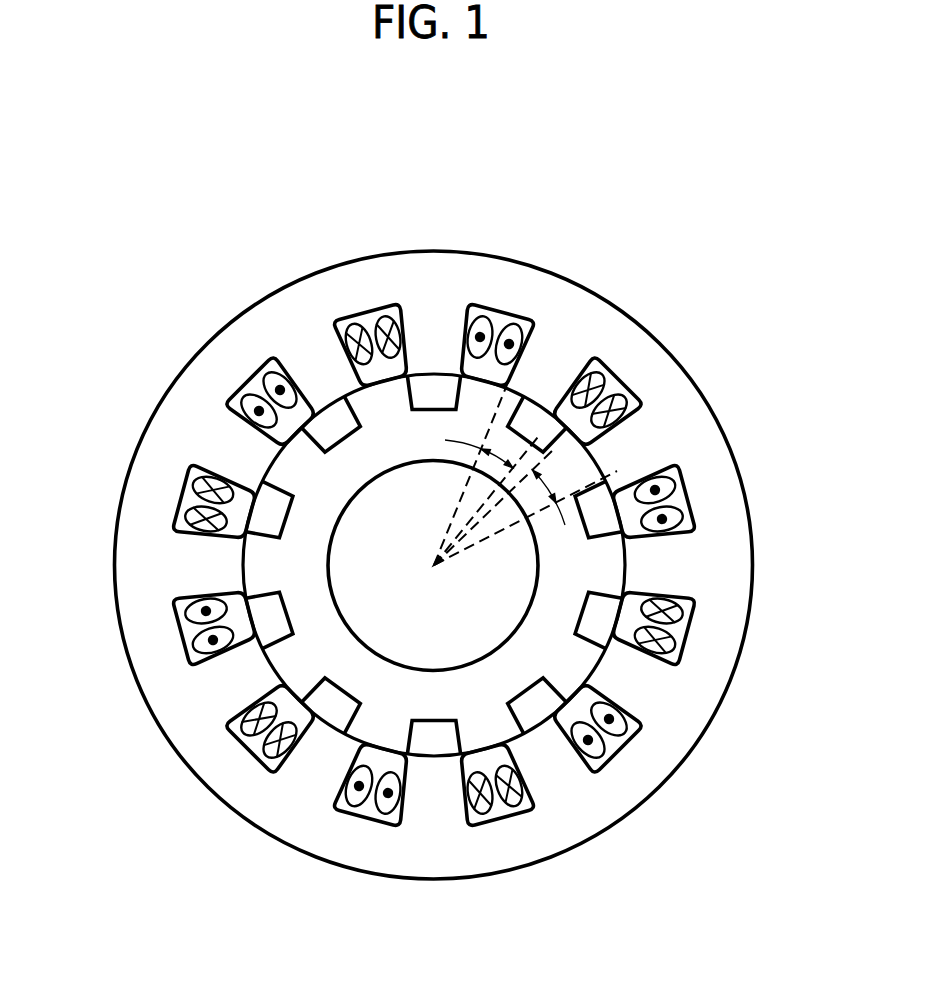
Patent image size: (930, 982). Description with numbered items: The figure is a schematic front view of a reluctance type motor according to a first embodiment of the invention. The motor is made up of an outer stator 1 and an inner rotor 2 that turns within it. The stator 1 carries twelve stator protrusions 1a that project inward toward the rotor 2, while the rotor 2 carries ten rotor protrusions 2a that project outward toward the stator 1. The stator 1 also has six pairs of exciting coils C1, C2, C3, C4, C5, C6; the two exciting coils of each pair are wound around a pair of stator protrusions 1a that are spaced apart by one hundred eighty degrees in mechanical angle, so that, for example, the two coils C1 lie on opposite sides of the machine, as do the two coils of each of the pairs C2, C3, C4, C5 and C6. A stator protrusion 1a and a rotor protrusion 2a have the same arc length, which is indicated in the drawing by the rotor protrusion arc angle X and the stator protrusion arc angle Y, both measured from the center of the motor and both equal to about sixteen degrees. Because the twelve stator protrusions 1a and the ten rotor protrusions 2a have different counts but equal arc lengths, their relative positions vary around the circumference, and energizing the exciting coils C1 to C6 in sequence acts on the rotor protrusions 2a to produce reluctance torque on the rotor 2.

The stator 1 is at (297, 302).
The stator protrusion 1a is at (330, 745).
The rotor 2 is at (368, 467).
The rotor protrusion 2a is at (383, 738).
The exciting coil C1 is at (484, 314).
The exciting coil C2 is at (603, 373).
The exciting coil C3 is at (676, 483).
The exciting coil C4 is at (685, 615).
The exciting coil C5 is at (626, 734).
The exciting coil C6 is at (516, 807).
The rotor protrusion arc angle X is at (550, 511).
The stator protrusion arc angle Y is at (479, 441).